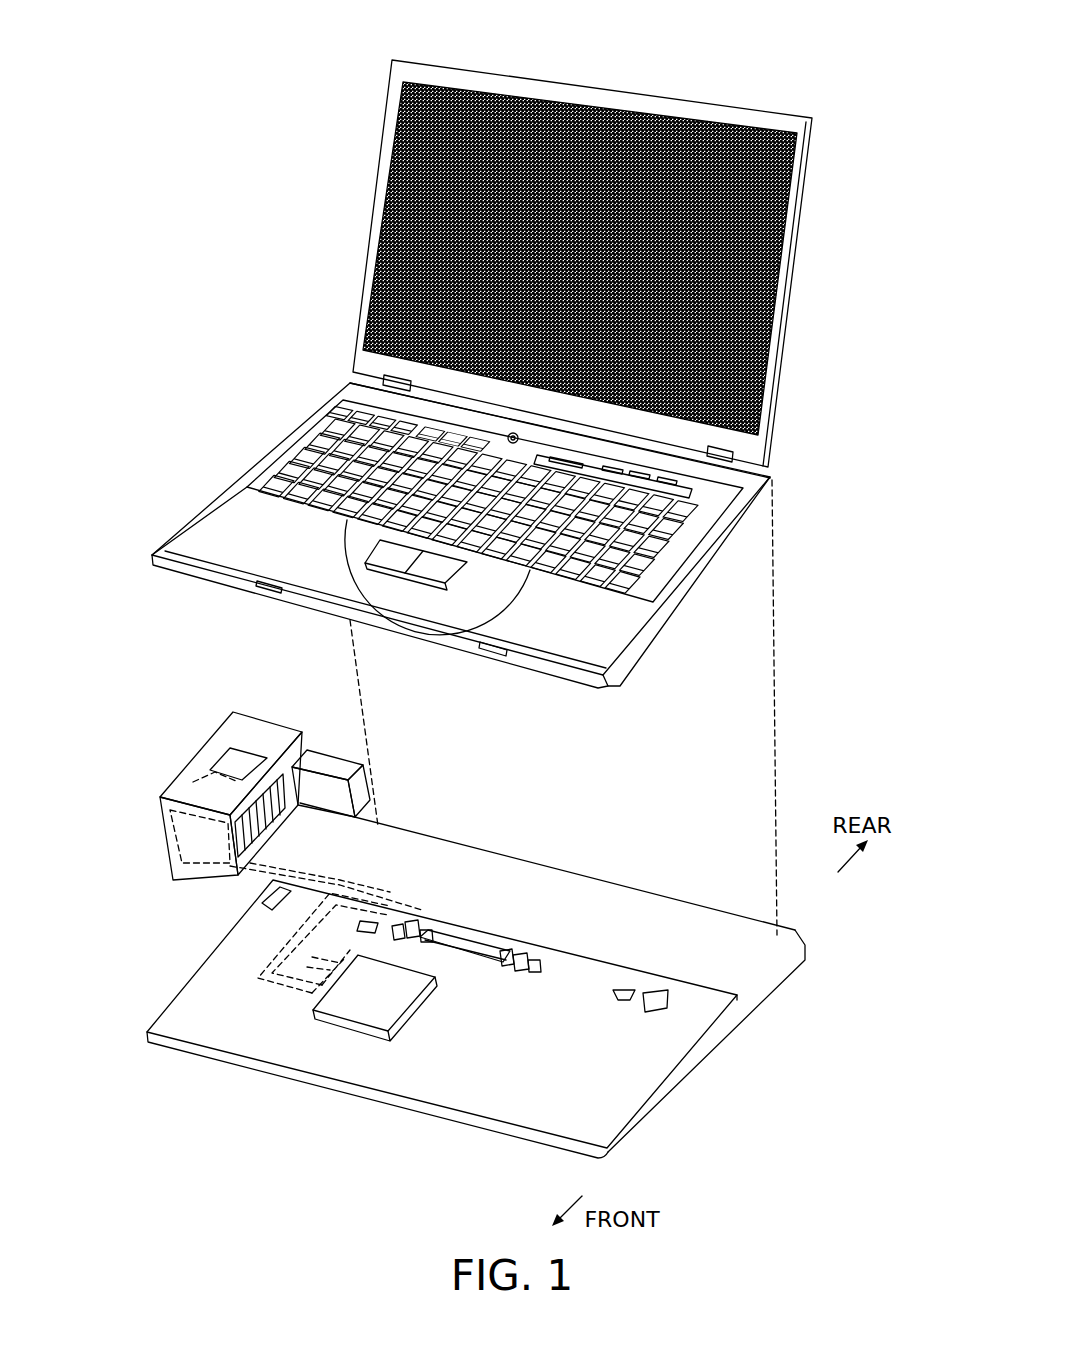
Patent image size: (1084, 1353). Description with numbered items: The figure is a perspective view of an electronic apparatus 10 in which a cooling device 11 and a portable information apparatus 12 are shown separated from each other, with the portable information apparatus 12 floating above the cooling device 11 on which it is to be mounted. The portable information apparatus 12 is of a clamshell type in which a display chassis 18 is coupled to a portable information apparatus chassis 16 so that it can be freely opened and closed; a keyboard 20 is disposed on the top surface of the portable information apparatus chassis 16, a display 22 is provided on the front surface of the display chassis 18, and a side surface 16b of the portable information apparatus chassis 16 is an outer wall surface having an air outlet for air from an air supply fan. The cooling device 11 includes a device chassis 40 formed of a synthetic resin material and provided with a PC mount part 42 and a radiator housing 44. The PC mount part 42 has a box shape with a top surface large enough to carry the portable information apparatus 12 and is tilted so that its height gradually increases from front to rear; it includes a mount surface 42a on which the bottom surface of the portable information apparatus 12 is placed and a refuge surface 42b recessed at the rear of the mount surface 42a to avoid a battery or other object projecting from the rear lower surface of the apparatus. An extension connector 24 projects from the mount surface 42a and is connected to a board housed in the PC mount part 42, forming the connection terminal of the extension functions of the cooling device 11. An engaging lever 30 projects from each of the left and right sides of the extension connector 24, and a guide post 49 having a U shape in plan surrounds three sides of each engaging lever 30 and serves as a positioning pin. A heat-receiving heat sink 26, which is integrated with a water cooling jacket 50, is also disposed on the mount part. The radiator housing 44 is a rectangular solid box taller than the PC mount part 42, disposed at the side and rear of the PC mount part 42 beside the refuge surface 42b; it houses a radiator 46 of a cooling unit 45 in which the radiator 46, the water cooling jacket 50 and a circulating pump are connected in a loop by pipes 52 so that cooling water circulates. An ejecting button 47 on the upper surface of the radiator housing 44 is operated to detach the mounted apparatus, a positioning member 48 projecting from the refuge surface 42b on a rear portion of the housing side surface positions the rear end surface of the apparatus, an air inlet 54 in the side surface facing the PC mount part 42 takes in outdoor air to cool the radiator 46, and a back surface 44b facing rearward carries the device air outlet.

The electronic apparatus 10 is at (505, 31).
The cooling device 11 is at (277, 1120).
The portable information apparatus 12 is at (830, 356).
The portable information apparatus chassis 16 is at (742, 526).
The side surface 16b is at (250, 487).
The display chassis 18 is at (790, 192).
The keyboard 20 is at (314, 445).
The display 22 is at (400, 188).
The extension connector 24 is at (462, 944).
The heat-receiving heat sink 26 is at (372, 1018).
The engaging lever 30 is at (405, 924).
The device chassis 40 is at (745, 1009).
The PC mount part 42 is at (200, 973).
The mount surface 42a is at (645, 1072).
The refuge surface 42b is at (748, 968).
The radiator housing 44 is at (162, 830).
The back surface 44b is at (232, 722).
The cooling unit 45 is at (238, 1000).
The radiator 46 is at (193, 782).
The ejecting button 47 is at (238, 762).
The positioning member 48 is at (328, 768).
The guide post 49 is at (428, 932).
The water cooling jacket 50 is at (368, 1054).
The pipes 52 is at (287, 998).
The air inlet 54 is at (243, 843).